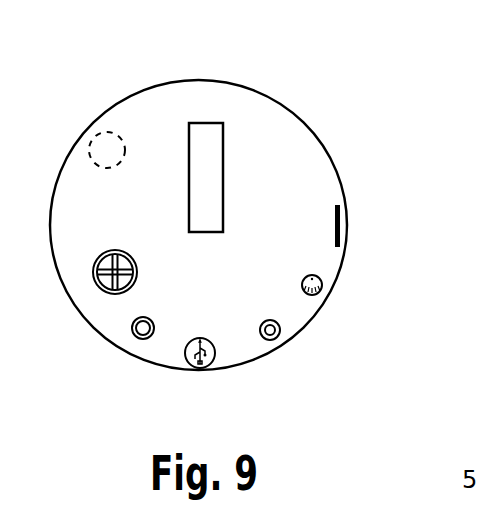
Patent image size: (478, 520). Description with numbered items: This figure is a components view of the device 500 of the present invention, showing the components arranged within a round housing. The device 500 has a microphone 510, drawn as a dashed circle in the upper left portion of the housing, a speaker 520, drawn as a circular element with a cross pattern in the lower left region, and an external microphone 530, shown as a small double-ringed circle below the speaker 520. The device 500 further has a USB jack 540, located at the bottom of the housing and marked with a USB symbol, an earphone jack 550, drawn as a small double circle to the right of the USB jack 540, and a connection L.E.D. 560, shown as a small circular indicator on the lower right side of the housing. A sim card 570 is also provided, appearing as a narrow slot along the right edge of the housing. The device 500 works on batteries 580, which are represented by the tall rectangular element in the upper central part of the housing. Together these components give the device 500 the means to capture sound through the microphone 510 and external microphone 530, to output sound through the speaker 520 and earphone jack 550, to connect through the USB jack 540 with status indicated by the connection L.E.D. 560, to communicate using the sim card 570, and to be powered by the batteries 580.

The device 500 is at (362, 102).
The microphone 510 is at (89, 148).
The speaker 520 is at (93, 270).
The external microphone 530 is at (132, 329).
The USB jack 540 is at (211, 363).
The earphone jack 550 is at (277, 337).
The connection L.E.D. 560 is at (322, 284).
The sim card 570 is at (341, 218).
The batteries 580 is at (210, 128).